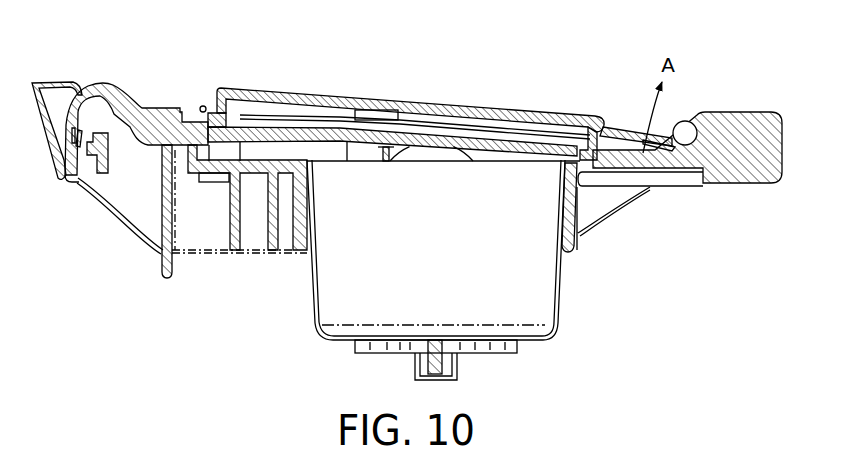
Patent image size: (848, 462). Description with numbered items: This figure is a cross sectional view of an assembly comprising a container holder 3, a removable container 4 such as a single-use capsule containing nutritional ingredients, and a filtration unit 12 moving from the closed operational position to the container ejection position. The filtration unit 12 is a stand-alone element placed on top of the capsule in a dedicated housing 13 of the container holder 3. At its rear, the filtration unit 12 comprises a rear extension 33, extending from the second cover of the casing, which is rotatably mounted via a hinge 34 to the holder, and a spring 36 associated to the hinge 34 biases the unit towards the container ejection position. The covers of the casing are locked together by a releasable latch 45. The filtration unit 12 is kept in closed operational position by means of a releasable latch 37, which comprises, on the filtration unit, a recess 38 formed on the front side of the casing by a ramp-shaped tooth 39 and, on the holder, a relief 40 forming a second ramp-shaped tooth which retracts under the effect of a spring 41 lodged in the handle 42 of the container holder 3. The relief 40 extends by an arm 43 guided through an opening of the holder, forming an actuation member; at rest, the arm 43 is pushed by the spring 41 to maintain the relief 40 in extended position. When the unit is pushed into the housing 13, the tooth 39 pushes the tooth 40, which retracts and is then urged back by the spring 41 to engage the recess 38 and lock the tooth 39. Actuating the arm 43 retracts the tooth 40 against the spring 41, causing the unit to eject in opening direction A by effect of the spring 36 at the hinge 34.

The container holder 3 is at (787, 112).
The removable container 4 is at (568, 292).
The filtration unit 12 is at (451, 104).
The dedicated housing 13 is at (262, 110).
The rear extension 33 is at (628, 128).
The hinge 34 is at (688, 126).
The spring 36 is at (657, 144).
The releasable latch 37 is at (146, 97).
The recess 38 is at (211, 107).
The ramp-shaped tooth 39 is at (199, 107).
The relief 40 is at (203, 160).
The spring 41 is at (74, 147).
The handle 42 is at (53, 96).
The arm 43 is at (131, 131).
The releasable latch 45 is at (230, 88).